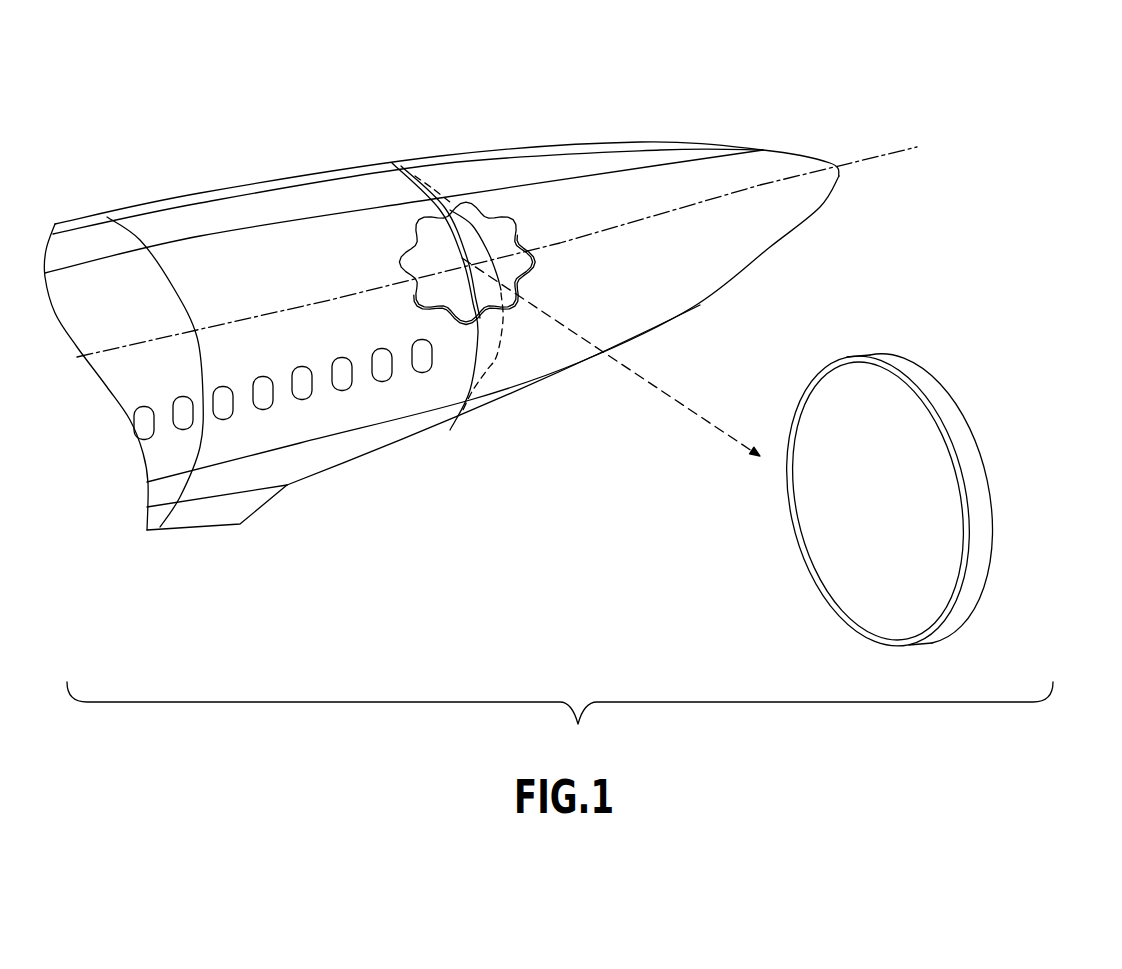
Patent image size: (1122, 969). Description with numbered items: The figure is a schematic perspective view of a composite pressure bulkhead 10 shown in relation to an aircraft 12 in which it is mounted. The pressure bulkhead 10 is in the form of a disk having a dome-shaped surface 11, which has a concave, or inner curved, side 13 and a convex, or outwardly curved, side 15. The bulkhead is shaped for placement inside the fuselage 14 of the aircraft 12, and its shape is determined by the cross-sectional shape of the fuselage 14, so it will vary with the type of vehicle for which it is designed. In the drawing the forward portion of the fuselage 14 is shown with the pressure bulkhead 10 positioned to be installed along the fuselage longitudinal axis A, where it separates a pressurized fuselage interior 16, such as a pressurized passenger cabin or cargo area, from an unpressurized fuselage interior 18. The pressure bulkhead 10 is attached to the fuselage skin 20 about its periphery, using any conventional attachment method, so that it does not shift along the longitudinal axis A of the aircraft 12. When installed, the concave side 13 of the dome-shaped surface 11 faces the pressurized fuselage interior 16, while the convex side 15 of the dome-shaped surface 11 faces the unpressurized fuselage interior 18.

The composite pressure bulkhead 10 is at (459, 222).
The dome-shaped surface 11 is at (977, 513).
The aircraft 12 is at (862, 116).
The concave side 13 is at (820, 530).
The fuselage 14 is at (757, 237).
The convex side 15 is at (970, 430).
The pressurized fuselage interior 16 is at (444, 292).
The unpressurized fuselage interior 18 is at (488, 204).
The fuselage skin 20 is at (412, 222).